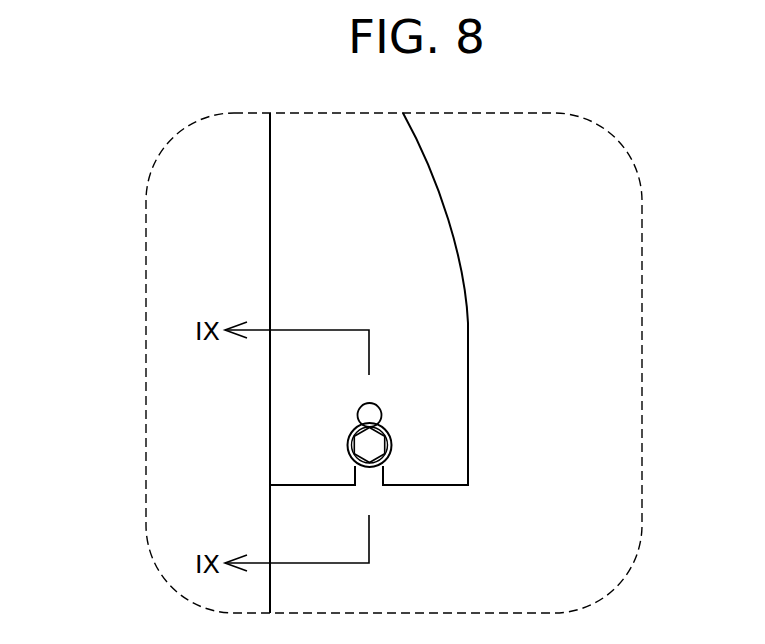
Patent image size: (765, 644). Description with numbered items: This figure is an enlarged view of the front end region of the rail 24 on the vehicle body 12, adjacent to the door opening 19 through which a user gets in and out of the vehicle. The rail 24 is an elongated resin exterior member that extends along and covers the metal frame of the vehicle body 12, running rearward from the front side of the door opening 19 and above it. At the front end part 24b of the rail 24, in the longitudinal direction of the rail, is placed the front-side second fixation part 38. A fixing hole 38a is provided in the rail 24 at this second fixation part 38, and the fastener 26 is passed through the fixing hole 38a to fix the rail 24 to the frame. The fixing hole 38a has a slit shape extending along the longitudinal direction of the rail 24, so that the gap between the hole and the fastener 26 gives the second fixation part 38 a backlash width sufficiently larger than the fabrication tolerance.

The vehicle body 12 is at (600, 225).
The door opening 19 is at (270, 418).
The rail 24 is at (297, 205).
The front end part of the rail 24b is at (468, 438).
The fastener 26 is at (375, 450).
The second fixation part 38 is at (441, 327).
The fixing hole 38a is at (376, 412).